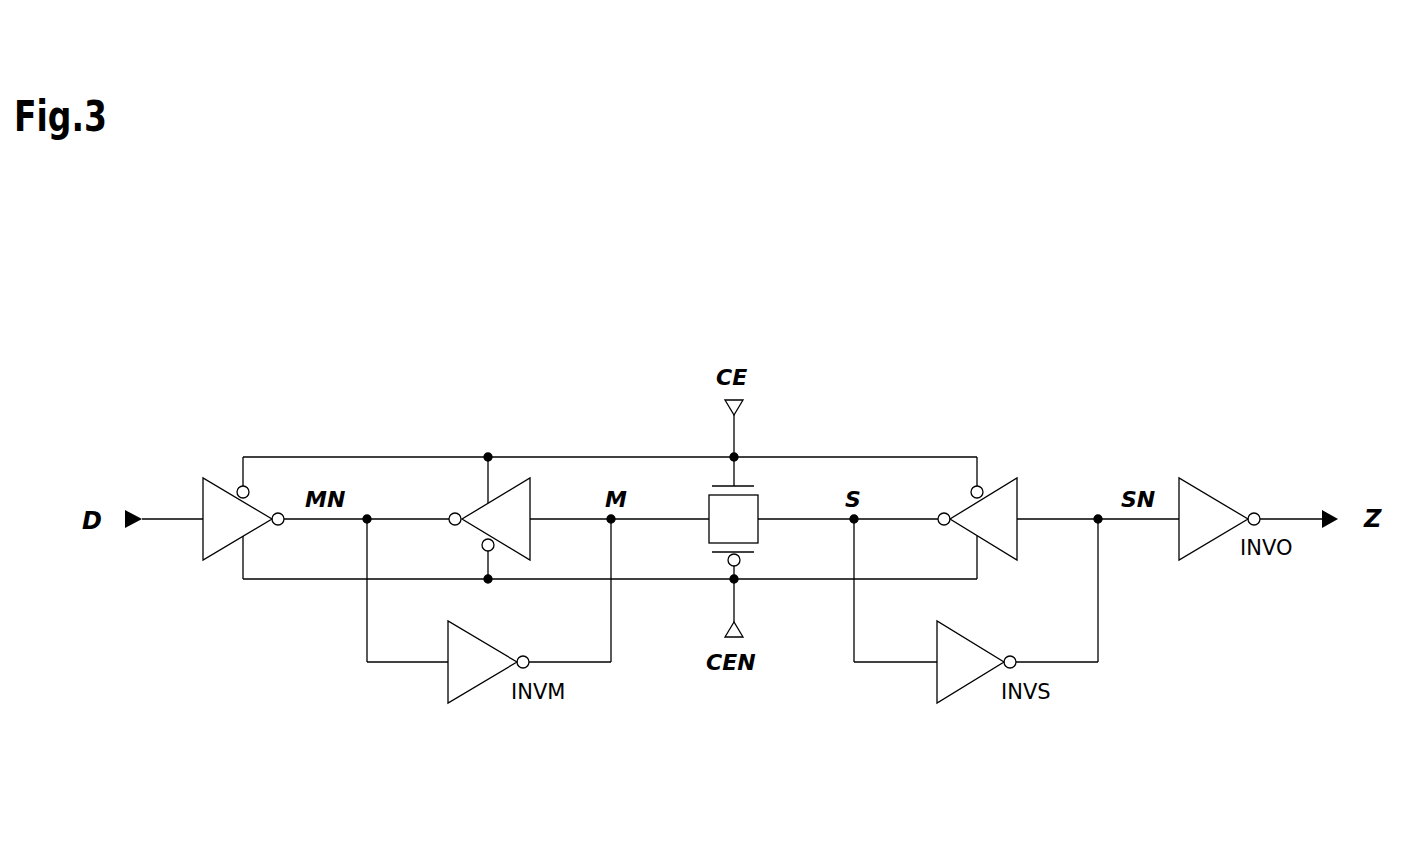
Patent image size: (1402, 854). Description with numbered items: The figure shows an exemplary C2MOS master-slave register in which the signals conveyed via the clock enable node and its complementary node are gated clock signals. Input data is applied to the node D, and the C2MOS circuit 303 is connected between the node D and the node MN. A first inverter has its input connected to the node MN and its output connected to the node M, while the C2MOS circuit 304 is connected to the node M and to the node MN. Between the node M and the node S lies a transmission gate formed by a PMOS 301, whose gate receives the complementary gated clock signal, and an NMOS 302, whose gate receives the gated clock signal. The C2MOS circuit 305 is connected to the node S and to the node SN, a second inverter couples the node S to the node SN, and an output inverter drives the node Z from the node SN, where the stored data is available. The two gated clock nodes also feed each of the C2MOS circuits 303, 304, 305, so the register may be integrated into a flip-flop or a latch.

The PMOS 301 is at (756, 565).
The NMOS 302 is at (756, 477).
The C2MOS circuit 303 is at (230, 525).
The C2MOS circuit 304 is at (468, 518).
The C2MOS circuit 305 is at (957, 518).